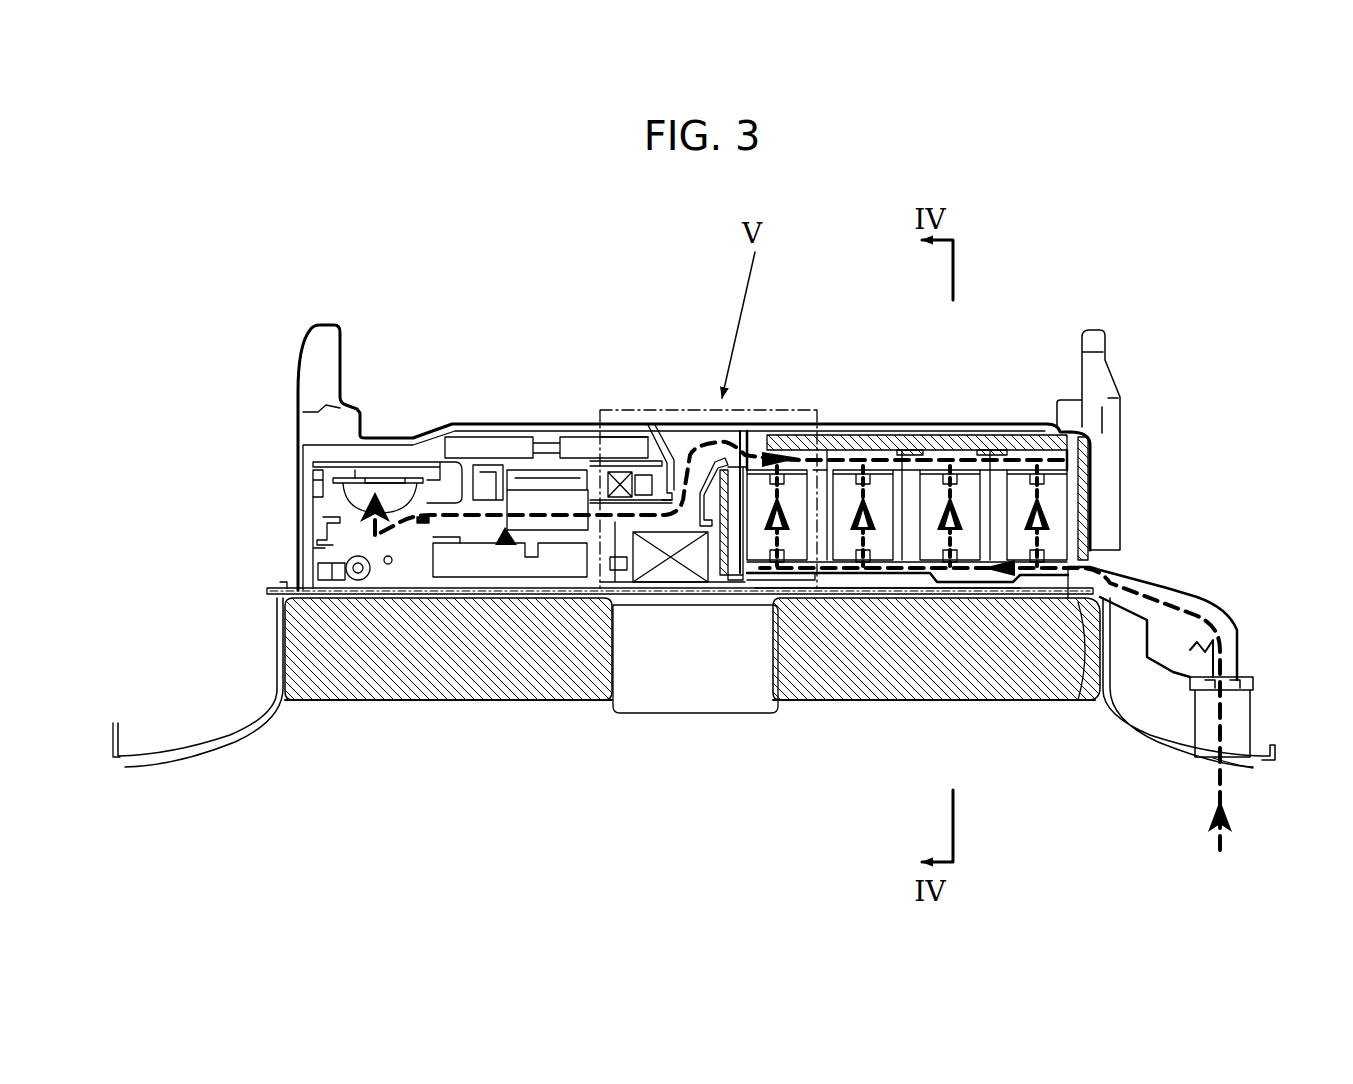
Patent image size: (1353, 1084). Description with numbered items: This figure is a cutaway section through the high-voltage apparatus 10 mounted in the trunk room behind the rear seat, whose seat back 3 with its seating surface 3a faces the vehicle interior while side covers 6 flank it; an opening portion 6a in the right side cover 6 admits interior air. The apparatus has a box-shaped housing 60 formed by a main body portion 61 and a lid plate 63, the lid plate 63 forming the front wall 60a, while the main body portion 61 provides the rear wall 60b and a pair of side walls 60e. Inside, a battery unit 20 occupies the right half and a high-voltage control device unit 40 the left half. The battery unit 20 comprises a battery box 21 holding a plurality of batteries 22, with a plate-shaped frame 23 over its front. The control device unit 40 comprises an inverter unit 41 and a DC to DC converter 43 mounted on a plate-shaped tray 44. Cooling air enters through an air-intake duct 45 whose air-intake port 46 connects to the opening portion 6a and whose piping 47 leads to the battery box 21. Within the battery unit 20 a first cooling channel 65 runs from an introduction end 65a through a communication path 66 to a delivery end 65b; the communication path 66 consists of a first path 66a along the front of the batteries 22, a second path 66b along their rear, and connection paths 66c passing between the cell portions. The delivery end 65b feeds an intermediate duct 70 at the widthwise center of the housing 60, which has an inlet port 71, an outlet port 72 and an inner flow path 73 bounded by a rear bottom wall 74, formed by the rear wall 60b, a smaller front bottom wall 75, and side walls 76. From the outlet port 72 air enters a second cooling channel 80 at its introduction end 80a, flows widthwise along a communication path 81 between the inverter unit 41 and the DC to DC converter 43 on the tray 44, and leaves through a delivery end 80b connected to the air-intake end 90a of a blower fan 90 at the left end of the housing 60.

The seat back 3 is at (982, 712).
The seating surface of the seat back 3a is at (1025, 704).
The side covers 6 is at (218, 742).
The opening portion 6a is at (1240, 772).
The high-voltage apparatus 10 is at (571, 294).
The battery unit 20 is at (1000, 426).
The battery box 21 is at (832, 432).
The batteries 22 is at (1055, 508).
The frame 23 is at (840, 590).
The high-voltage control device unit 40 is at (620, 420).
The inverter unit 41 is at (488, 492).
The DC to DC converter 43 is at (555, 572).
The tray 44 is at (447, 500).
The air-intake duct 45 is at (1178, 586).
The air-intake port 46 is at (1215, 686).
The piping 47 is at (1200, 596).
The housing 60 is at (397, 420).
The front wall 60a is at (400, 600).
The rear wall 60b is at (557, 423).
The side walls 60e is at (304, 542).
The main body portion 61 is at (457, 417).
The lid plate 63 is at (340, 600).
The first cooling channel 65 is at (945, 600).
The introduction end 65a is at (1090, 640).
The delivery end 65b is at (762, 440).
The communication path 66 is at (905, 440).
The first path 66a is at (860, 582).
The second path 66b is at (860, 447).
The connection paths 66c is at (820, 582).
The intermediate duct 70 is at (685, 412).
The inlet port 71 is at (735, 440).
The outlet port 72 is at (706, 585).
The inner flow path 73 is at (672, 412).
The bottom wall 74 is at (695, 410).
The bottom wall 75 is at (716, 590).
The side walls 76 is at (617, 530).
The second cooling channel 80 is at (600, 600).
The introduction end 80a is at (640, 620).
The delivery end 80b is at (470, 600).
The communication path 81 is at (500, 537).
The blower fan 90 is at (337, 505).
The air-intake end 90a is at (353, 520).